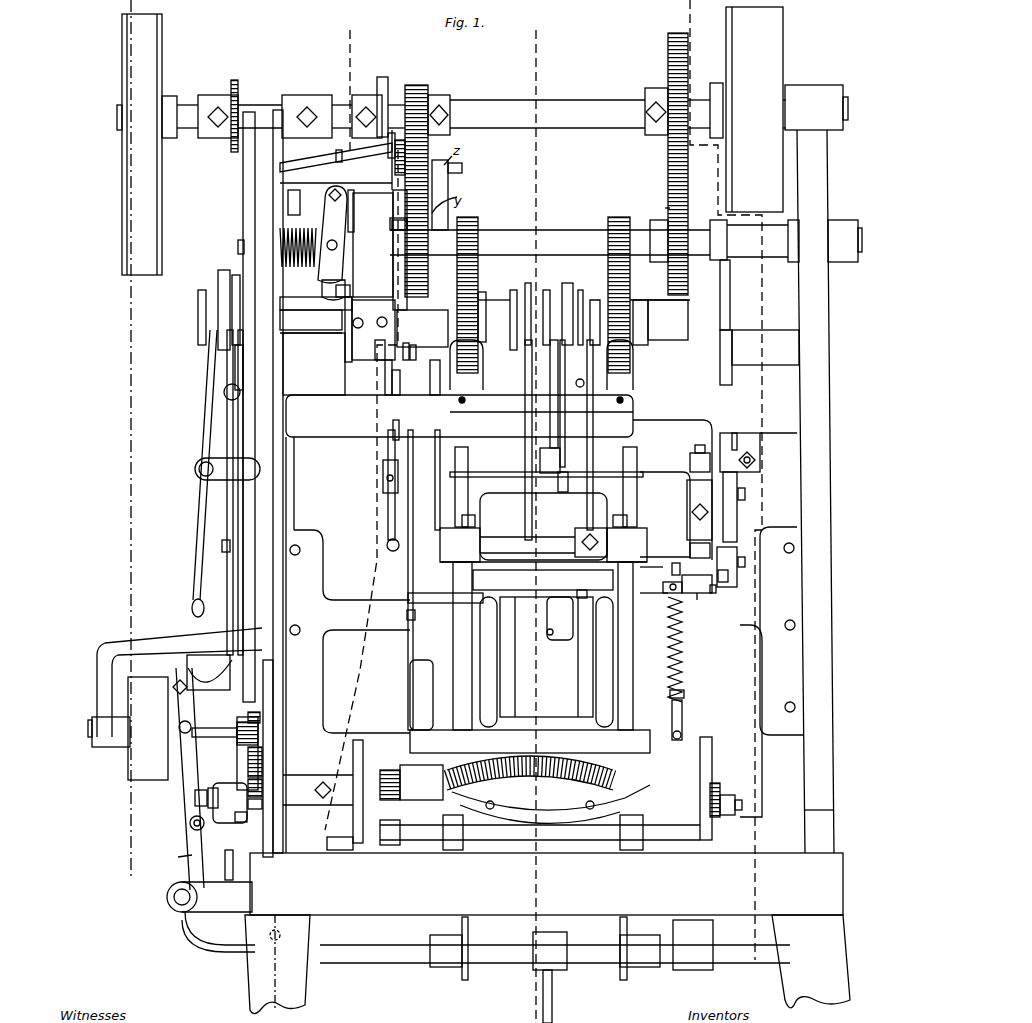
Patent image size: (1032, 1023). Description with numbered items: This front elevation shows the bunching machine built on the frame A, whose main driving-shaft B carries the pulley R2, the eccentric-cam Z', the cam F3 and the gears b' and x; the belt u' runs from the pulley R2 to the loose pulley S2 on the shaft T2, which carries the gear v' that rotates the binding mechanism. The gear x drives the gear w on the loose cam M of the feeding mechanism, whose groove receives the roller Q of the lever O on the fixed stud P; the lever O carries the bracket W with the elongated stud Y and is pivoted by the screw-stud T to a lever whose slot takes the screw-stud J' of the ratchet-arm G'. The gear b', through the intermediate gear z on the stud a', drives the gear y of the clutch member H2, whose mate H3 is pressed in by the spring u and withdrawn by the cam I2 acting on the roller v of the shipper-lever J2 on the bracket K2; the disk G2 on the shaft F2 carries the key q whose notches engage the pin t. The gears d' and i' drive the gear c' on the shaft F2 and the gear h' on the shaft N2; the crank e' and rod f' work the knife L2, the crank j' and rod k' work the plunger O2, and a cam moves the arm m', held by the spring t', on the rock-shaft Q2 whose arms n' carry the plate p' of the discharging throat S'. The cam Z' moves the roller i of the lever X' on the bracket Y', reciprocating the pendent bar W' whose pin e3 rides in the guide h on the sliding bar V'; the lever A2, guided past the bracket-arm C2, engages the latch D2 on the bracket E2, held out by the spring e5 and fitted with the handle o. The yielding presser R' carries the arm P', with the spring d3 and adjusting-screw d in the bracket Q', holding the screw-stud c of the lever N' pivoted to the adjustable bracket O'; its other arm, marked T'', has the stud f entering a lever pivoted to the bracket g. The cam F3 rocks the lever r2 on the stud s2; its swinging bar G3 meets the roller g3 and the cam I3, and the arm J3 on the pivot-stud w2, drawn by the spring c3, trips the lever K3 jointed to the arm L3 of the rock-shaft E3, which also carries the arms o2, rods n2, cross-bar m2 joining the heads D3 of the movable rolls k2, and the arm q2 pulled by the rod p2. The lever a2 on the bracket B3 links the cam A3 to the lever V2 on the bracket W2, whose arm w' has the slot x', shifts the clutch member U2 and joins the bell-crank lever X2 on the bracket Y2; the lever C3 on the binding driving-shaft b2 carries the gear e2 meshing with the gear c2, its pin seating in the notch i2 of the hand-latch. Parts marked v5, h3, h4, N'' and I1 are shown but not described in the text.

The frame A is at (547, 933).
The main driving-shaft B is at (577, 97).
The cam M is at (711, 240).
The lever O is at (732, 295).
The fixed stud P is at (759, 357).
The bracket W is at (740, 443).
The elongated stud Y is at (758, 459).
The screw-stud T is at (748, 496).
The roller Q is at (718, 535).
The pulley R2 is at (162, 220).
The cam F3 is at (240, 92).
The eccentric-cam Z' is at (390, 98).
The gear b' is at (423, 181).
The roller i is at (396, 142).
The gear x is at (705, 487).
The lever N' is at (626, 240).
The gear d' is at (476, 292).
The gear i' is at (519, 465).
The gear w is at (661, 207).
The bracket K2 is at (315, 170).
The bracket Y' is at (338, 164).
The lever X' is at (378, 155).
The pendent engaging-bar W' is at (388, 244).
The shipper-lever J2 is at (335, 222).
The friction-clutch member H2 is at (373, 245).
The clutch member H3 is at (354, 215).
The pin t is at (393, 223).
The spiral spring u is at (298, 256).
The roller v is at (324, 290).
The stop v5 is at (350, 292).
The lever r2 is at (243, 200).
The stud s2 is at (238, 246).
The cam A3 is at (201, 290).
The cam I3 is at (231, 298).
The cam I2 is at (340, 305).
The shaft F2 is at (310, 338).
The disk G2 is at (395, 310).
The sliding bar or key q is at (422, 328).
The intermediate gear z is at (533, 522).
The stud a' is at (464, 170).
The gear y is at (361, 419).
The crank e' is at (516, 311).
The gear c' is at (486, 311).
The crank j' is at (573, 310).
The connecting-rod p2 is at (582, 312).
The gear h' is at (638, 312).
The shaft N2 is at (665, 316).
The lever A2 is at (386, 368).
The latch D2 is at (392, 378).
The upright slotted guide h is at (420, 352).
The guiding arm or pin e3 is at (416, 360).
The sliding bar V' is at (430, 386).
The spring e5 is at (399, 428).
The connecting-rod f' is at (520, 440).
The connecting-rod k' is at (555, 416).
The spring t' is at (572, 403).
The arm m' is at (594, 448).
The bracket E2 is at (388, 447).
The bracket-arm C2 is at (383, 462).
The knob or handle o is at (387, 548).
The bar T'' is at (435, 600).
The stud f is at (401, 618).
The plunger O2 is at (500, 485).
The knife or gate L2 is at (495, 552).
The rock-shaft Q2 is at (520, 545).
The arms n' is at (558, 651).
The yielding presser R' is at (546, 661).
The roller g3 is at (552, 610).
The arm h3 is at (582, 600).
The pin h4 is at (560, 645).
The discharging throat or passage S' is at (726, 516).
The screw-stud J' is at (754, 565).
The ratchet-arm G' is at (744, 580).
The arm P' is at (687, 569).
The screw-stud c is at (712, 600).
The arm N'' is at (693, 604).
The spring d3 is at (684, 640).
The bracket Q' is at (689, 689).
The adjusting-screw d is at (689, 717).
The bracket g is at (410, 737).
The adjustable bracket O' is at (530, 766).
The plate p' is at (556, 784).
The cross-bar m2 is at (425, 835).
The attaching-heads D3 is at (330, 775).
The plate I1 is at (353, 745).
The rock-shaft E3 is at (555, 954).
The rods n2 is at (465, 945).
The arms o2 is at (455, 968).
The arm q2 is at (533, 972).
The lever a2 is at (208, 425).
The lever K3 is at (232, 512).
The arm J3 is at (242, 442).
The bracket B3 is at (227, 469).
The pivot-stud w2 is at (225, 553).
The notch i2 is at (243, 375).
The swinging bar G3 is at (240, 390).
The slot x' is at (186, 611).
The bracket W2 is at (178, 670).
The upwardly-extending arm w' is at (202, 681).
The loose pulley and friction-clutch member S2 is at (132, 765).
The lever V2 is at (196, 758).
The bracket Y2 is at (208, 888).
The shaft T2 is at (216, 728).
The lever C3 is at (245, 785).
The gear e2 is at (262, 765).
The spiral spring c3 is at (261, 787).
The gear c2 is at (261, 803).
The gear v' is at (268, 758).
The movable rolls k2 is at (253, 710).
The sliding clutch member U2 is at (180, 797).
The driving-shaft b2 is at (207, 797).
The bell-crank lever X2 is at (175, 858).
The arm L3 is at (230, 863).
The belt u' is at (141, 440).